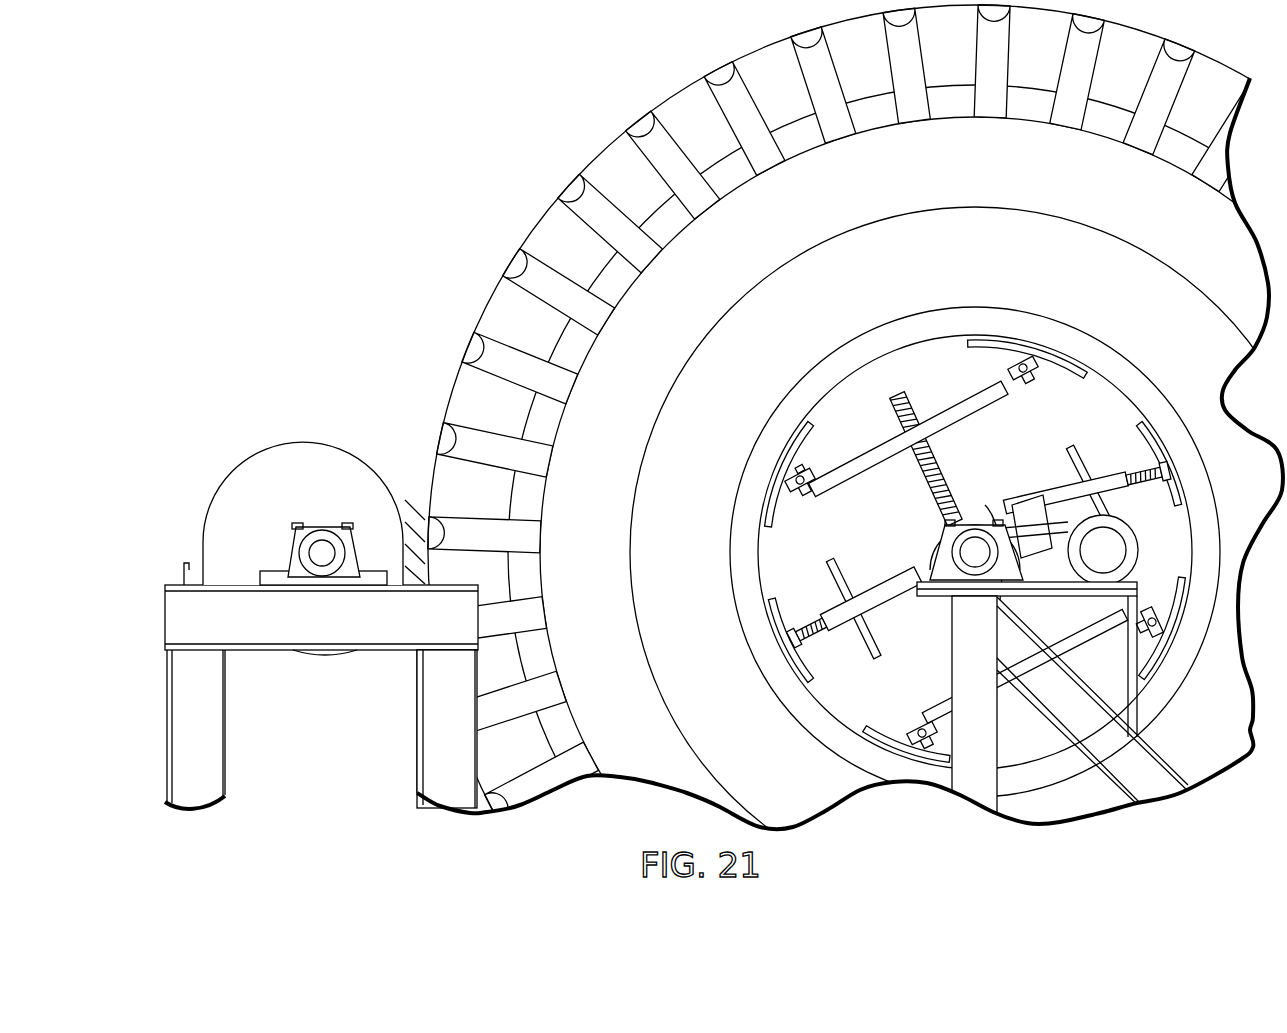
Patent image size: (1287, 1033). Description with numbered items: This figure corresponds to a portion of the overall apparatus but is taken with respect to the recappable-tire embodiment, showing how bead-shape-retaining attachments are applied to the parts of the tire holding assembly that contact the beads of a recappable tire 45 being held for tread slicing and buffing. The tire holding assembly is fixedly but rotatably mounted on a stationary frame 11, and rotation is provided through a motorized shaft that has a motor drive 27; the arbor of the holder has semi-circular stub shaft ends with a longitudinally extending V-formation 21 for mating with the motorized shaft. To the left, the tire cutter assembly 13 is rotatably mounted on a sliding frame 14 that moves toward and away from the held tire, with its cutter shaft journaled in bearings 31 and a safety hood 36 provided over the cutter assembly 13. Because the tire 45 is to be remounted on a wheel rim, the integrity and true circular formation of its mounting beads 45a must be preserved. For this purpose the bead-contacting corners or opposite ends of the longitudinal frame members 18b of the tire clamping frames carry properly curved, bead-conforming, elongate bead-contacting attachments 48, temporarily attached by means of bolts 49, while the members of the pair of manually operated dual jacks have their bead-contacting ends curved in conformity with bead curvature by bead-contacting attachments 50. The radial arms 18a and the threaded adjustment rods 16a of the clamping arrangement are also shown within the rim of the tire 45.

The stationary frame 11 is at (1127, 777).
The tire cutter assembly 13 is at (307, 416).
The sliding frame 14 is at (262, 640).
The threaded adjustment rod 16a is at (953, 473).
The radial arm 18a is at (862, 467).
The longitudinal frame members 18b is at (805, 498).
The V-formation 21 is at (977, 548).
The motor drive 27 is at (1107, 550).
The bearings 31 is at (972, 520).
The hood 36 is at (233, 497).
The tire 45 is at (615, 159).
The mounting beads 45a is at (1022, 318).
The bead-contacting attachments 48 is at (1083, 340).
The bolts 49 is at (805, 464).
The bead-contacting attachments 50 is at (1180, 483).